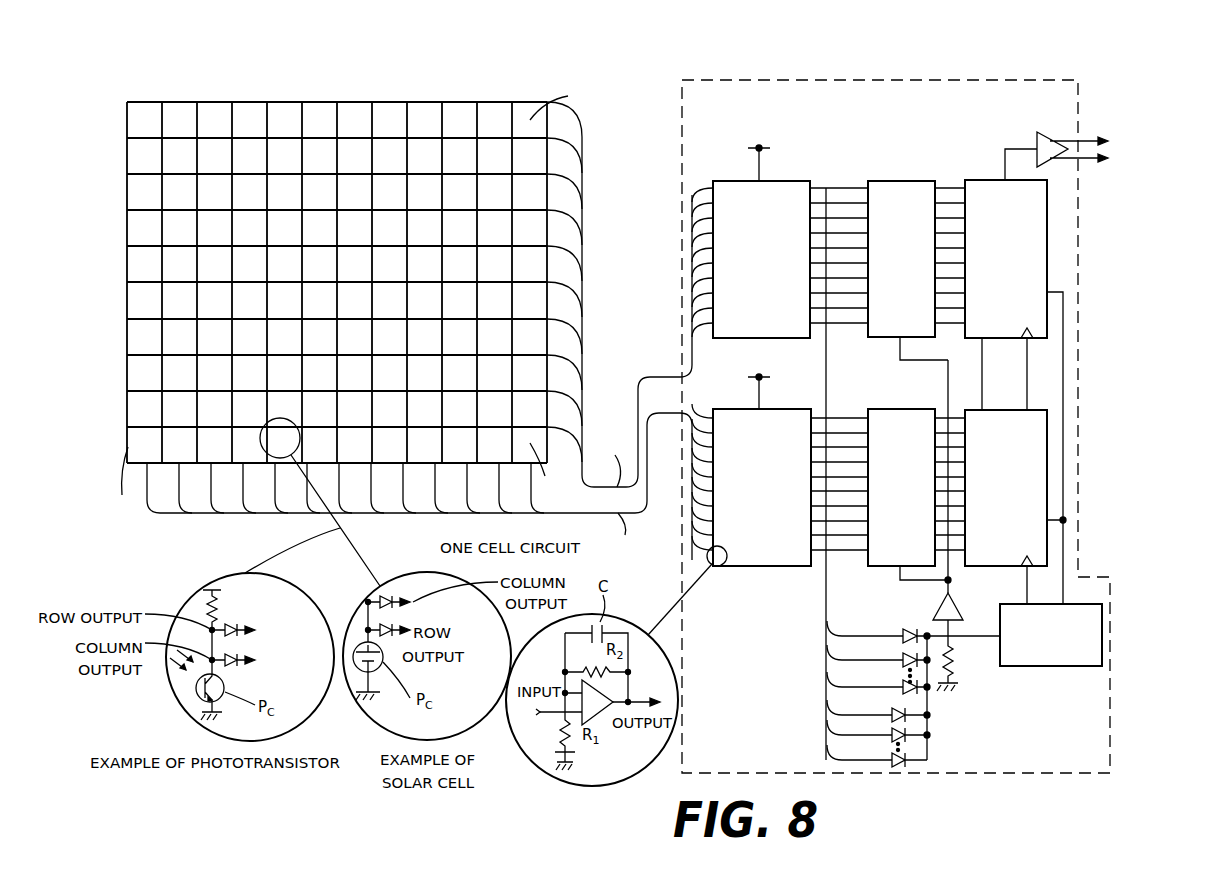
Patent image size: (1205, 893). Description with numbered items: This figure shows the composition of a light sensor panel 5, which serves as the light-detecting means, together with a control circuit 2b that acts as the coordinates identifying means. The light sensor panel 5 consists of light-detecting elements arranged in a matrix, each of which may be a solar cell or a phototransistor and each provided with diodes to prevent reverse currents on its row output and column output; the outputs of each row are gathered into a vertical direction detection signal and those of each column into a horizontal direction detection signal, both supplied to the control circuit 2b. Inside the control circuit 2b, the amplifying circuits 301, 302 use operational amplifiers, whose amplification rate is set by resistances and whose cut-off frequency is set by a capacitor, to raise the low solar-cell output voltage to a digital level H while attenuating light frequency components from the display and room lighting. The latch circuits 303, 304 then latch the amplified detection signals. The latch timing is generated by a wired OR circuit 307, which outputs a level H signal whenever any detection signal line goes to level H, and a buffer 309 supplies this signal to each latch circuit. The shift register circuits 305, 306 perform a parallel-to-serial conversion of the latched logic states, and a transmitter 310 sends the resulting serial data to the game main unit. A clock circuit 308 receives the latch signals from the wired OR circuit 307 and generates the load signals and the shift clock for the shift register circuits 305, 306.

The light sensor panel 5 is at (417, 102).
The control circuit 2b is at (712, 80).
The amplifying circuit 301 is at (733, 181).
The amplifying circuit 302 is at (733, 409).
The latch circuit 303 is at (880, 181).
The latch circuit 304 is at (890, 409).
The shift register circuit 305 is at (980, 180).
The shift register circuit 306 is at (1008, 410).
The wired OR circuit 307 is at (938, 730).
The clock circuit 308 is at (1033, 666).
The buffer 309 is at (952, 593).
The transmitter 310 is at (1086, 138).